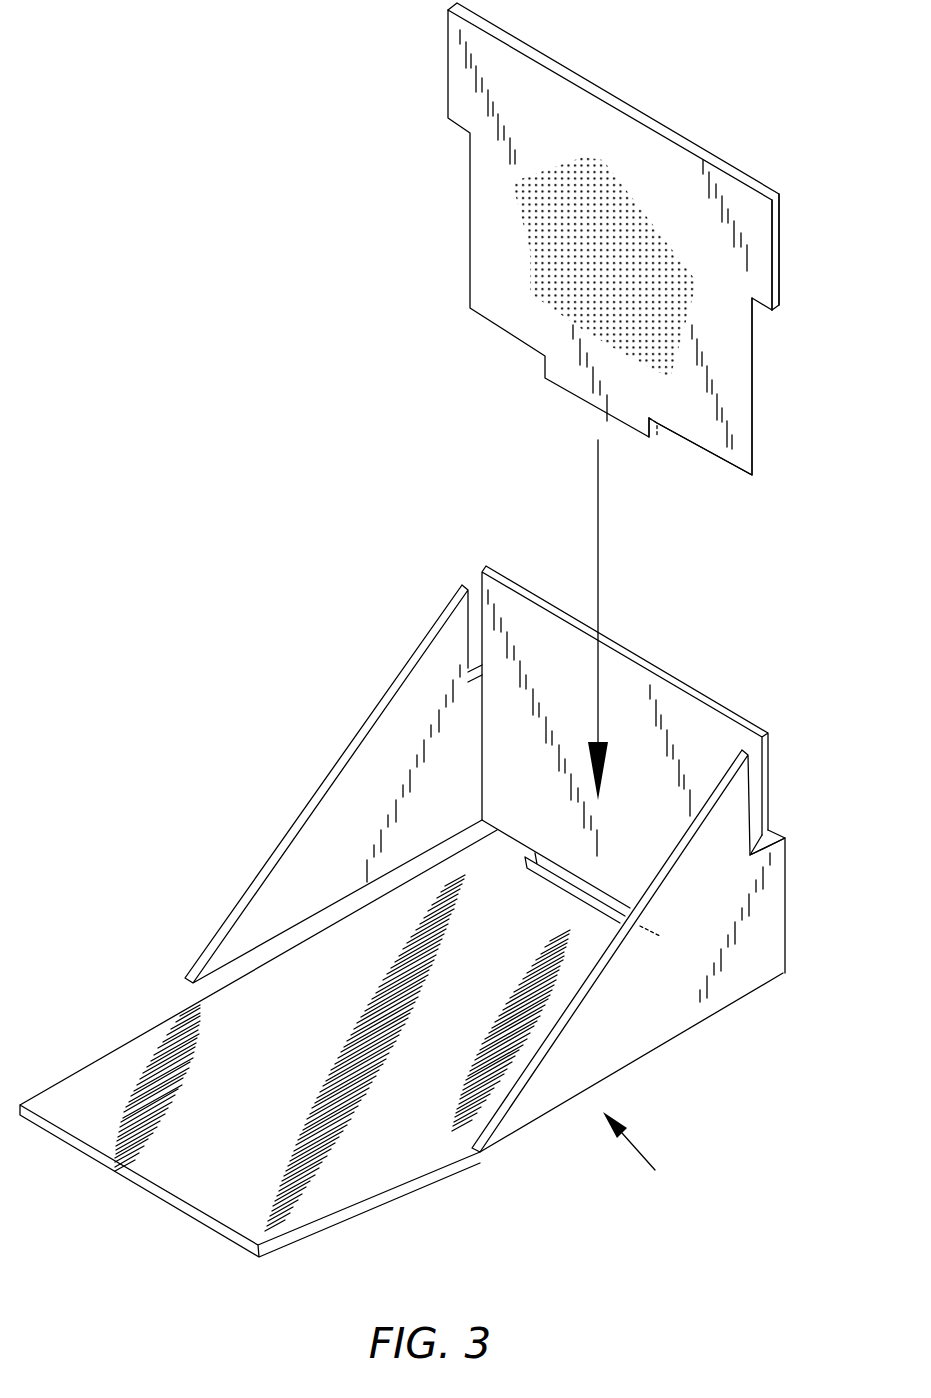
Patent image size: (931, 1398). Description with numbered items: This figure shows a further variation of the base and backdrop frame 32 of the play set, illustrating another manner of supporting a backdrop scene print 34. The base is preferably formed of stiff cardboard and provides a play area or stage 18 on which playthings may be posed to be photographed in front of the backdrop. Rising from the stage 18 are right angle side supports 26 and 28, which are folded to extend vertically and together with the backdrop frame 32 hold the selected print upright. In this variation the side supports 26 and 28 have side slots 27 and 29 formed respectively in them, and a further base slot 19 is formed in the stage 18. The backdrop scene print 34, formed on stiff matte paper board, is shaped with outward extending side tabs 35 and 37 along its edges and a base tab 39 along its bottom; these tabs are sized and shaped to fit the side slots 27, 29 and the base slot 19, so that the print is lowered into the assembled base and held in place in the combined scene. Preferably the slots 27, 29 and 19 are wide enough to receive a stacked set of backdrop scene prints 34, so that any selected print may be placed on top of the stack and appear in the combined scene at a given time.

The side tab 35 is at (448, 85).
The side tab 37 is at (780, 256).
The backdrop scene print 34 is at (752, 422).
The base tab 39 is at (651, 440).
The side slot 27 is at (481, 580).
The side slot 29 is at (766, 806).
The side support 26 is at (318, 772).
The side support 28 is at (713, 1002).
The stage 18 is at (377, 1200).
The base slot 19 is at (576, 897).
The backdrop frame 32 is at (645, 1164).